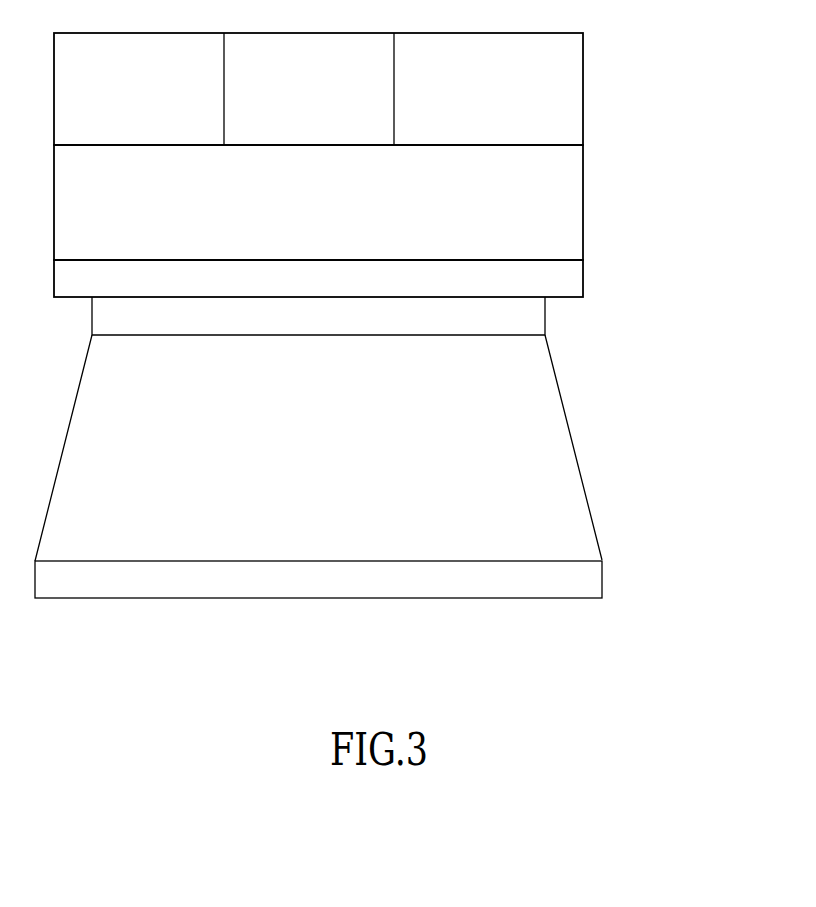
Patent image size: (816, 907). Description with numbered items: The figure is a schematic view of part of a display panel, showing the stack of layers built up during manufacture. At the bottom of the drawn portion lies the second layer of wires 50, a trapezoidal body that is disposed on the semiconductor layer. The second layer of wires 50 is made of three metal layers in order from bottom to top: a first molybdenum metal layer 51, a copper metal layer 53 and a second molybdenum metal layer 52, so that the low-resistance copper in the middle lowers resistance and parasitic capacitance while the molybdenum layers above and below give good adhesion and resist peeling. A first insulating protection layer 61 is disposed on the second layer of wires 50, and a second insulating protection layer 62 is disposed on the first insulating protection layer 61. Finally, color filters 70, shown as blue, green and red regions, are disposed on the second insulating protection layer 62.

The second layer of wires 50 is at (391, 309).
The base plate 51 is at (572, 574).
The light guide neck 52 is at (522, 318).
The tapered light guide body 53 is at (533, 524).
The first insulating protection layer 61 is at (568, 285).
The second insulating protection layer 62 is at (553, 196).
The color filters 70 is at (553, 85).